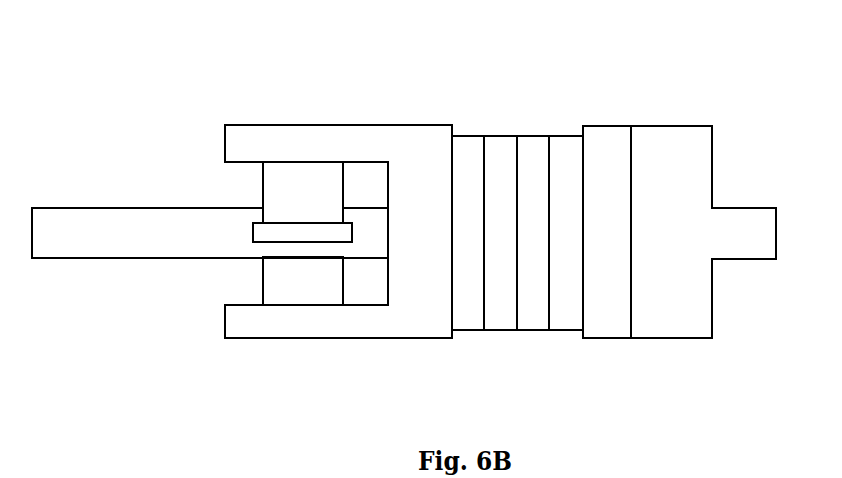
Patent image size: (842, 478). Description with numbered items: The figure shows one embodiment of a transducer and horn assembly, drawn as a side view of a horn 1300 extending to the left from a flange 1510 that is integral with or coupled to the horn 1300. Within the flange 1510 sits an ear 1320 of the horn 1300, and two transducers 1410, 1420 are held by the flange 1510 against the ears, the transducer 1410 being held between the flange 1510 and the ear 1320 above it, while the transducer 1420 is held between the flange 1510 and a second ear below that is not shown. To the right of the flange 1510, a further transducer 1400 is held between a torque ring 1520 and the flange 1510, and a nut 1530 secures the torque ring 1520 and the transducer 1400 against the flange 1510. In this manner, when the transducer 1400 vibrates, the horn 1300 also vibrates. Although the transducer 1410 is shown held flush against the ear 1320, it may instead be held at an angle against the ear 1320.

The horn 1300 is at (86, 199).
The ear 1320 is at (244, 225).
The transducer 1400 is at (519, 127).
The transducer 1410 is at (330, 203).
The transducer 1420 is at (330, 292).
The flange 1510 is at (310, 116).
The torque ring 1520 is at (607, 117).
The nut 1530 is at (689, 117).